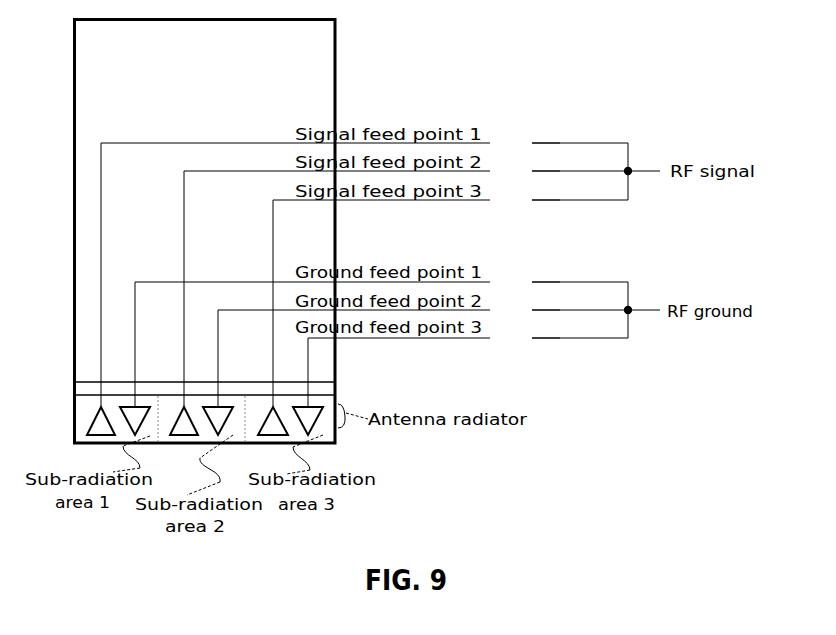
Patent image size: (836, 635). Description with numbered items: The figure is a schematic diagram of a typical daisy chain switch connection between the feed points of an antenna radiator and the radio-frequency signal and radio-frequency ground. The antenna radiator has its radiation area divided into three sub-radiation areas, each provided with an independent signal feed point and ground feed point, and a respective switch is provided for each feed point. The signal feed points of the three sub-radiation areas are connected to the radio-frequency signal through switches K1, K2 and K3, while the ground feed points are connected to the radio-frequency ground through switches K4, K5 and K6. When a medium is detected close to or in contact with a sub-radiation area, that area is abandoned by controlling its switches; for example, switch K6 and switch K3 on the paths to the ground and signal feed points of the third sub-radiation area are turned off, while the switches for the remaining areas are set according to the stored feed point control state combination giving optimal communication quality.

The switch K1 is at (490, 143).
The switch K2 is at (490, 171).
The switch K3 is at (490, 200).
The switch K4 is at (490, 282).
The switch K5 is at (490, 310).
The switch K6 is at (490, 338).